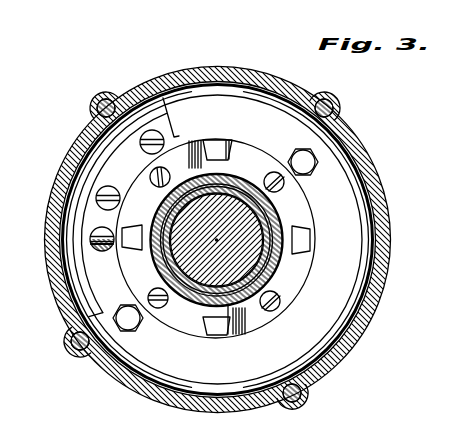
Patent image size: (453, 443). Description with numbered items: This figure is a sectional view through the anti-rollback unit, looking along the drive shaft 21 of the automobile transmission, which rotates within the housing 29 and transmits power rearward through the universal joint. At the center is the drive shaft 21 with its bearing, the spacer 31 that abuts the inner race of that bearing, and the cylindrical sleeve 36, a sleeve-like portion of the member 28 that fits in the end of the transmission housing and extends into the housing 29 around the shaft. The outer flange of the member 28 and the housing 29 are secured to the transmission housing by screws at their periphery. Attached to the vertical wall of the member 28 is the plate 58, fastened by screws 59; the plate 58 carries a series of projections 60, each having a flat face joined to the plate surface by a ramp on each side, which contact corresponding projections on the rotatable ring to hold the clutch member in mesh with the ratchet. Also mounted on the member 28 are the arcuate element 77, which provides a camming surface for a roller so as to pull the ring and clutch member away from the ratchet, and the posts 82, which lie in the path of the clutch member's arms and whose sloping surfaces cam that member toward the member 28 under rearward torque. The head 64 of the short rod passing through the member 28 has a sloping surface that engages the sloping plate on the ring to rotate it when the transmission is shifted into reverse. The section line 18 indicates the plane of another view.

The section line 18- 18 is at (258, 108).
The drive shaft 21 is at (252, 318).
The member 28 is at (226, 221).
The housing 29 is at (338, 124).
The spacer 31 is at (200, 299).
The sleeve 36 is at (226, 221).
The plate 58 is at (305, 276).
The screws 59 is at (281, 300).
The projections 60 is at (216, 140).
The head 64 is at (98, 236).
The arcuate element 77 is at (82, 188).
The posts 82 is at (318, 162).